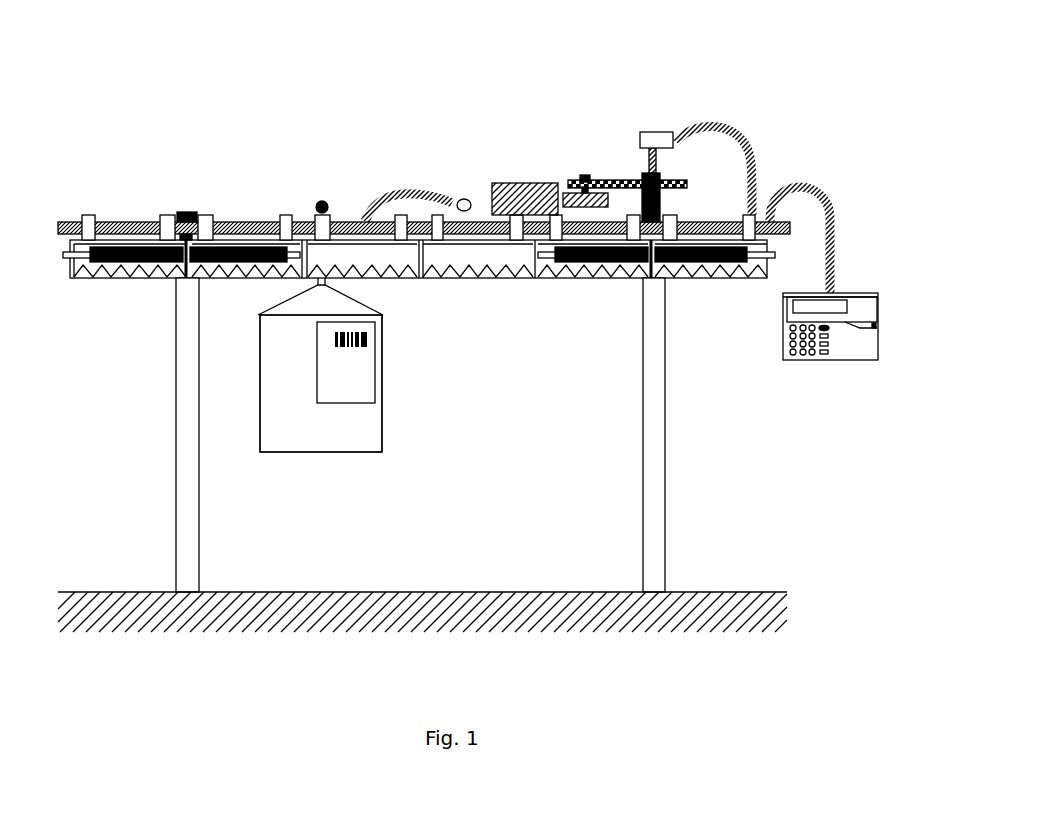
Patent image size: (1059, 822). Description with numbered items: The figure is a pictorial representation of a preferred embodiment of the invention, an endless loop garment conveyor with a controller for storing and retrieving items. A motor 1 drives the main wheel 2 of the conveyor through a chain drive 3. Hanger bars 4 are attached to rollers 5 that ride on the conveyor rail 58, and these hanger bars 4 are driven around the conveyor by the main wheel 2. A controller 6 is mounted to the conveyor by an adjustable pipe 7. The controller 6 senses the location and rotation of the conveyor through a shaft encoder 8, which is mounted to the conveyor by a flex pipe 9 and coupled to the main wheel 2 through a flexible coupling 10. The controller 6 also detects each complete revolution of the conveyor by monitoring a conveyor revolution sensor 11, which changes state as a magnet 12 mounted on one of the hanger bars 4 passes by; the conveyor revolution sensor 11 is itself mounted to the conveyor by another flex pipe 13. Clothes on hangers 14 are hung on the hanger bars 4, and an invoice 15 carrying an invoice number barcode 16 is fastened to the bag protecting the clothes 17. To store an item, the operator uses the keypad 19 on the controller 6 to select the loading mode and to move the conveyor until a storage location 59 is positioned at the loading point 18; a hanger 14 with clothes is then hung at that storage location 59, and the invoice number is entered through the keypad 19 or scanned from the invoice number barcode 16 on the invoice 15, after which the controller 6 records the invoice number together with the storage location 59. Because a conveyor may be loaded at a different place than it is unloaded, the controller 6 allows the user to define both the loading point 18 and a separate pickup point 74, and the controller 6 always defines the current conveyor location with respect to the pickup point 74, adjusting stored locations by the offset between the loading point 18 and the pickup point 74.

The motor 1 is at (537, 182).
The main wheel 2 is at (708, 240).
The chain drive 3 is at (597, 183).
The hanger bars 4 is at (408, 280).
The rollers 5 is at (287, 207).
The controller 6 is at (857, 308).
The adjustable pipe 7 is at (803, 180).
The shaft encoder 8 is at (664, 132).
The flex pipe 9 is at (732, 125).
The flexible coupling 10 is at (700, 118).
The conveyor revolution sensor 11 is at (467, 197).
The magnet 12 is at (325, 197).
The flex pipe 13 is at (427, 193).
The hangers 14 is at (272, 323).
The invoice 15 is at (373, 357).
The invoice number barcode 16 is at (342, 350).
The bag protecting the clothes 17 is at (283, 458).
The loading point 18 is at (697, 283).
The keypad 19 is at (812, 342).
The conveyor rail 58 is at (352, 217).
The storage location 59 is at (320, 281).
The pickup point 74 is at (137, 293).